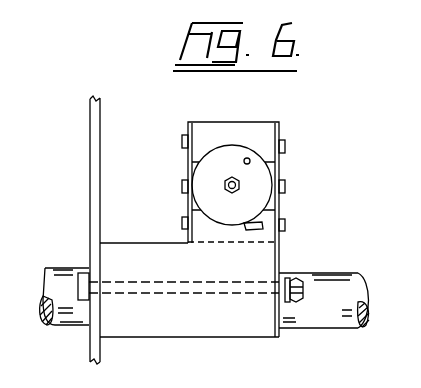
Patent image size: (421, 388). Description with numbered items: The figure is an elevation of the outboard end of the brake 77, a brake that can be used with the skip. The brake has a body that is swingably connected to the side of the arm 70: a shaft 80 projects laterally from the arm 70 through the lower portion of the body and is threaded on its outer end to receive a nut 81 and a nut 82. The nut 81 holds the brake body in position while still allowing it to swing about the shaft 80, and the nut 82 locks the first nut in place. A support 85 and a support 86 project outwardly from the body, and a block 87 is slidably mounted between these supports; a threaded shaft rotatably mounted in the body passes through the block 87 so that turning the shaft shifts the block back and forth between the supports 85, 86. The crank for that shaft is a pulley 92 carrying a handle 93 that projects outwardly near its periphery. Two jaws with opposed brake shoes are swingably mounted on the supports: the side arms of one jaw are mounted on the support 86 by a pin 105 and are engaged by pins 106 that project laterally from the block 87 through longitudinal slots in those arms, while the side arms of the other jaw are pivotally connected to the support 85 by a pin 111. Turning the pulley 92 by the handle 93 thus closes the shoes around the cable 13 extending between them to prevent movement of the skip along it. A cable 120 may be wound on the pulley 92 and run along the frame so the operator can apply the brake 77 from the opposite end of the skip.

The cable 13 is at (333, 282).
The arm 70 is at (90, 142).
The brake 77 is at (167, 101).
The shaft 80 is at (227, 297).
The nut 81 is at (288, 280).
The nut 82 is at (297, 301).
The support 85 is at (263, 124).
The support 86 is at (270, 218).
The block 87 is at (276, 172).
The pulley 92 is at (228, 153).
The handle 93 is at (251, 160).
The pin 105 is at (182, 223).
The pins 106 is at (182, 187).
The pin 111 is at (182, 140).
The cable 120 is at (252, 230).